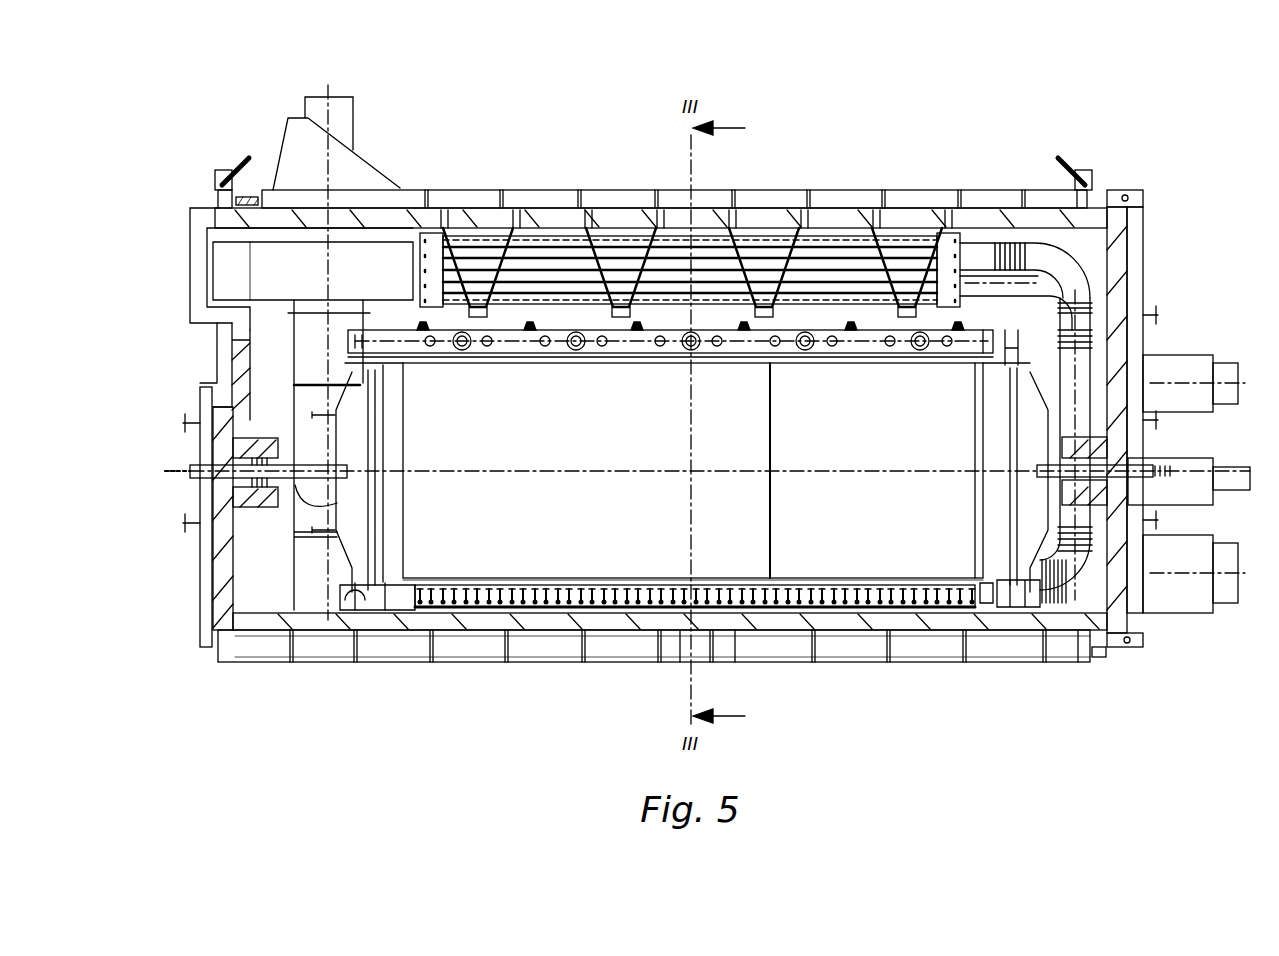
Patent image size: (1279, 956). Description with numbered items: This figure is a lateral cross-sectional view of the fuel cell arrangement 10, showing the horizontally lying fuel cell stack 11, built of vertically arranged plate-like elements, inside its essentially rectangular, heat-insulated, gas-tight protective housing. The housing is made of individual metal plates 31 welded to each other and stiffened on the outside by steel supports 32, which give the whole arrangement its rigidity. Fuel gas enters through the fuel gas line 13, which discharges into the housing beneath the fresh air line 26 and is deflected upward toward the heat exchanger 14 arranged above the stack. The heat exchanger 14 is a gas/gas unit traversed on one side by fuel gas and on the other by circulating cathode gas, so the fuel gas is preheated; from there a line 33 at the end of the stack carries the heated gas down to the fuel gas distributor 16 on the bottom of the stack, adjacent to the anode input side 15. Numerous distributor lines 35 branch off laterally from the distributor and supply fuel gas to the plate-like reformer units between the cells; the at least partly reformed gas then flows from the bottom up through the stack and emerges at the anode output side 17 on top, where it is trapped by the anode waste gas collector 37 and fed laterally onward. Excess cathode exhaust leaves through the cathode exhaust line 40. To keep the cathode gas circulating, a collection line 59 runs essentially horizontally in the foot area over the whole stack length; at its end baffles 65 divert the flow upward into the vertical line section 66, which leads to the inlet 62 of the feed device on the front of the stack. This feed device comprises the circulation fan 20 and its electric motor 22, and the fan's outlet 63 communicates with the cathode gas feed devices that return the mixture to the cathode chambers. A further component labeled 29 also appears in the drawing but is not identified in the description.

The fuel cell arrangement 10 is at (1172, 172).
The fuel cell stack 11 is at (837, 547).
The fuel gas line 13 is at (1065, 265).
The heat exchanger 14 is at (828, 262).
The anode input side 15 is at (607, 614).
The fuel gas distributor 16 is at (408, 602).
The anode output side 17 is at (620, 357).
The circulation fan 20 is at (288, 275).
The electric motor 22 is at (342, 105).
The fresh air line 26 is at (1225, 373).
The cover plate 29 is at (555, 220).
The metal plates 31 is at (482, 225).
The steel supports 32 is at (503, 203).
The line 33 is at (1080, 295).
The distributor lines 35 is at (490, 586).
The anode waste gas collector 37 is at (750, 337).
The cathode exhaust line 40 is at (1220, 583).
The collection line 59 is at (320, 488).
The inlet 62 is at (317, 303).
The outlet 63 is at (408, 265).
The baffles 65 is at (335, 490).
The vertical line section 66 is at (303, 400).